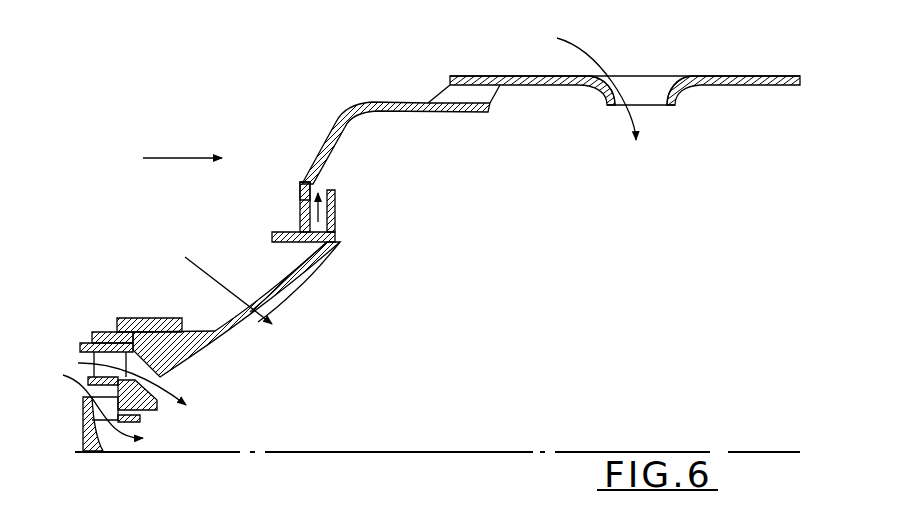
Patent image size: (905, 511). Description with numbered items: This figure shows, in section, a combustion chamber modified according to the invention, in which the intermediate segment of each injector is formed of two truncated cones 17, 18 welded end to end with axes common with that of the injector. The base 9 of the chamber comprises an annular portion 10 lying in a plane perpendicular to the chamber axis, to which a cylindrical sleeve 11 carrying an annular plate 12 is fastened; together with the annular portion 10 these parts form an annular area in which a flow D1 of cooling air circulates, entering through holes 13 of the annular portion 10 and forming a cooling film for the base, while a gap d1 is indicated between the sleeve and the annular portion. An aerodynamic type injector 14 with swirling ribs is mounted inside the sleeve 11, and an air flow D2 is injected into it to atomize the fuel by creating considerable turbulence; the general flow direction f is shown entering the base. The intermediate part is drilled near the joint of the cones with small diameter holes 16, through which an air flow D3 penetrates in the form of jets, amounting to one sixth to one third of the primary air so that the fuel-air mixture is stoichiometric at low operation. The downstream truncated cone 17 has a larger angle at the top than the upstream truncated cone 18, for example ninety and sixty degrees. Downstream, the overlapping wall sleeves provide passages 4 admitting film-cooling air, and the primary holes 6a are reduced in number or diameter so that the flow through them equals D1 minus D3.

The passages 4 is at (450, 85).
The primary holes 6a is at (658, 104).
The base of the chamber 9 is at (300, 134).
The annular portion 10 is at (300, 186).
The cylindrical sleeve 11 is at (279, 243).
The annular plate 12 is at (335, 207).
The holes 13 is at (300, 200).
The aerodynamic type injector 14 is at (84, 418).
The small diameter holes 16 is at (270, 313).
The downstream truncated cone 17 is at (328, 253).
The upstream truncated cone 18 is at (225, 332).
The gap width d1 is at (318, 221).
The flow of cooling air D1 is at (578, 81).
The air flow D2 is at (113, 395).
The flow of air D3 is at (217, 279).
The flow direction f is at (182, 145).